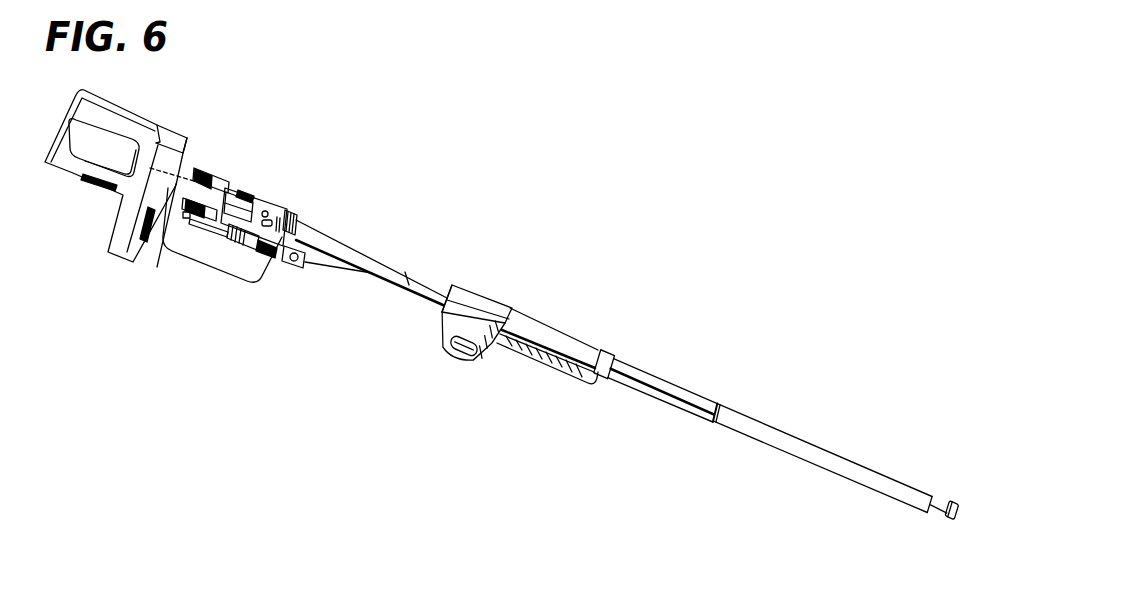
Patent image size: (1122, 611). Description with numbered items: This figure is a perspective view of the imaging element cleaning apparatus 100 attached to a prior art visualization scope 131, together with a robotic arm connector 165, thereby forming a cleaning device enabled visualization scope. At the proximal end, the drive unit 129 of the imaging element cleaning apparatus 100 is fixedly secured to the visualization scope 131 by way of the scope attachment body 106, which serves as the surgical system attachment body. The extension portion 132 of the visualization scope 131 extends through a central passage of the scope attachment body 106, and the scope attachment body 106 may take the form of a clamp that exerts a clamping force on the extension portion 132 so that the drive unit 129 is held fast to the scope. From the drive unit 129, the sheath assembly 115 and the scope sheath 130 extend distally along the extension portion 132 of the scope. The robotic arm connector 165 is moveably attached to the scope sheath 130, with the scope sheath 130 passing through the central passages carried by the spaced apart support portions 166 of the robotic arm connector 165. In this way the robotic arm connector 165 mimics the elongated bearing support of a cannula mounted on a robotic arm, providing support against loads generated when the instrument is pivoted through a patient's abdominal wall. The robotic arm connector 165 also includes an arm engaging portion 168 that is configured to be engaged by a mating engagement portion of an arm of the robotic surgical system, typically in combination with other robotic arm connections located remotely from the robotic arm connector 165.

The imaging element cleaning apparatus 100 is at (491, 162).
The scope attachment body 106 is at (244, 189).
The sheath assembly 115 is at (642, 362).
The drive unit 129 is at (262, 186).
The scope sheath 130 is at (693, 392).
The visualization scope 131 is at (142, 119).
The extension portion 132 is at (157, 267).
The robotic arm connector 165 is at (493, 296).
The support portions 166 is at (466, 291).
The arm engaging portion 168 is at (450, 352).